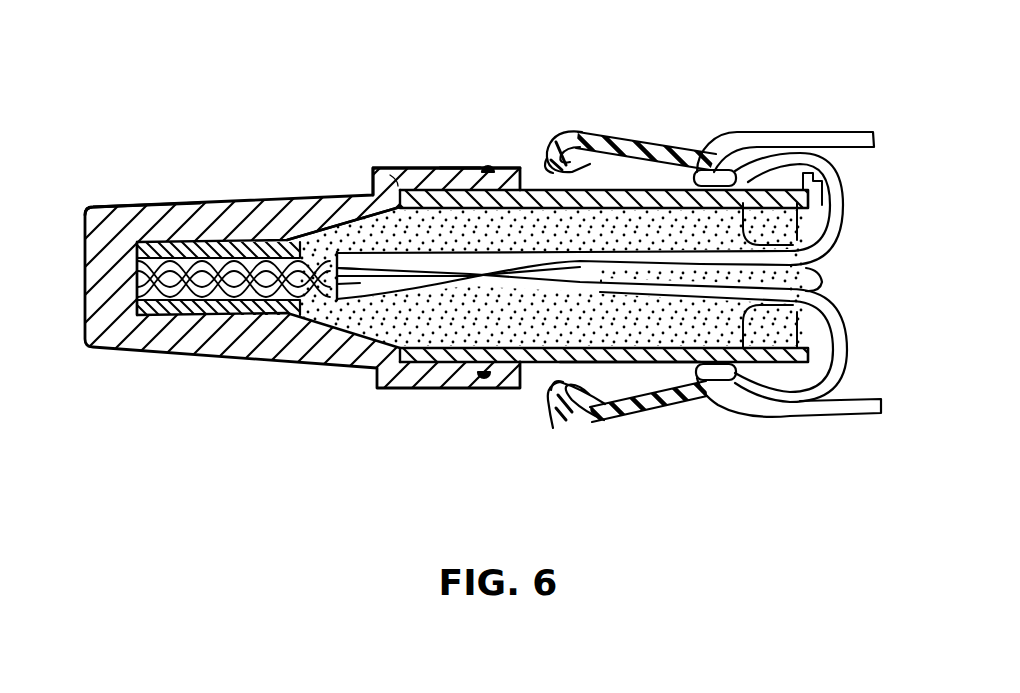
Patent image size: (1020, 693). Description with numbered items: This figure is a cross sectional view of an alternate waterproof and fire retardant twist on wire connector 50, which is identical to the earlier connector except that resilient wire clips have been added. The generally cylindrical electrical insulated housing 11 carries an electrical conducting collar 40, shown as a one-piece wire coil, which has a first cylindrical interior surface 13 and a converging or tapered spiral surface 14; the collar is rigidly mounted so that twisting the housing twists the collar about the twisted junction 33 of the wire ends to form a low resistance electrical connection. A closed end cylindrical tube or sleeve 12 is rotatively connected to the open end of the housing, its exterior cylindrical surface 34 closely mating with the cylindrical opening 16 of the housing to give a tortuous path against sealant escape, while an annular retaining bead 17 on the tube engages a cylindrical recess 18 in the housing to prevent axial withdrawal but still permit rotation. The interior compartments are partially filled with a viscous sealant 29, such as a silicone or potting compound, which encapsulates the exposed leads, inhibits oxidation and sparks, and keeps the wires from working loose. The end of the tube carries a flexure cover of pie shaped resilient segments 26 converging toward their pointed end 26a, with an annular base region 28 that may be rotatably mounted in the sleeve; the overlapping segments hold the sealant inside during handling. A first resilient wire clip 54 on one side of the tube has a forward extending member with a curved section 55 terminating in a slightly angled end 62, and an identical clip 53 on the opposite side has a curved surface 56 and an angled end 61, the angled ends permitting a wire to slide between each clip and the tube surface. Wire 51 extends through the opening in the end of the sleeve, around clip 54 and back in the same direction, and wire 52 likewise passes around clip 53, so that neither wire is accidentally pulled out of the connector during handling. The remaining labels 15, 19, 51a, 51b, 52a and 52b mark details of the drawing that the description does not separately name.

The electrical insulated housing 11 is at (225, 203).
The cylindrical tube or sleeve 12 is at (657, 193).
The first cylindrical interior surface 13 is at (133, 274).
The spiral surface 14 is at (283, 237).
The flange 15 is at (378, 198).
The cylindrical opening 16 is at (458, 167).
The annular cylindrical retaining bead 17 is at (484, 378).
The cylindrical recess 18 is at (135, 207).
The shoulder 19 is at (398, 185).
The resilient segments 26 is at (778, 228).
The pointed end 26a is at (737, 165).
The annular base region 28 is at (810, 172).
The viscous sealant 29 is at (545, 335).
The twisted junction 33 is at (300, 312).
The exterior cylindrical surface 34 is at (592, 366).
The electrical conducting collar 40 is at (180, 240).
The connector 50 is at (642, 121).
The wire 51 is at (842, 131).
The ferrule end 51a is at (345, 303).
The ferrule crimp 51b is at (335, 290).
The wire 52 is at (850, 416).
The upper strand end 52a is at (348, 250).
The lower strand end 52b is at (333, 248).
The resilient wire clip 53 is at (660, 412).
The first resilient wire clip 54 is at (682, 160).
The curved section 55 is at (595, 143).
The curved surface 56 is at (597, 416).
The angled end 61 is at (560, 385).
The end 62 is at (546, 170).